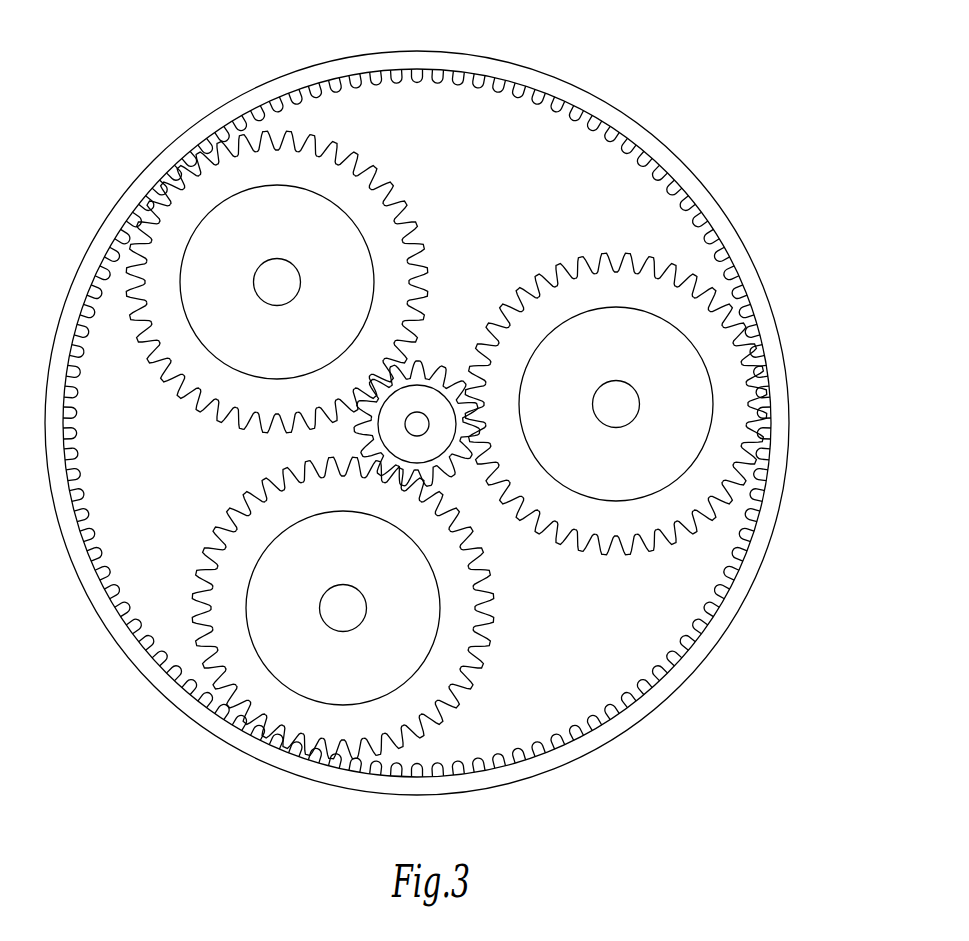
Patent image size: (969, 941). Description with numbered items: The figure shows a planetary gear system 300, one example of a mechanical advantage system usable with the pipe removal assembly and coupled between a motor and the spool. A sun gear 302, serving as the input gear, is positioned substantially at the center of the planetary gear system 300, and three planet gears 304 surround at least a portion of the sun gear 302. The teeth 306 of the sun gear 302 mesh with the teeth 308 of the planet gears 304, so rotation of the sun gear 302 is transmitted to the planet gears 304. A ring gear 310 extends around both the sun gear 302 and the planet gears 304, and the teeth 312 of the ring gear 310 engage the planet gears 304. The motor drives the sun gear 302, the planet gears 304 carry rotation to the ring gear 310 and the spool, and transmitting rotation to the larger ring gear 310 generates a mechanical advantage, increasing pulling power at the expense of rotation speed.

The planetary gear system 300 is at (413, 422).
The sun gear 302 is at (428, 443).
The planet gears 304 is at (442, 444).
The teeth of the sun gear 306 is at (435, 372).
The teeth of the planet gears 308 is at (427, 288).
The ring gear 310 is at (683, 158).
The teeth of the ring gear 312 is at (627, 153).